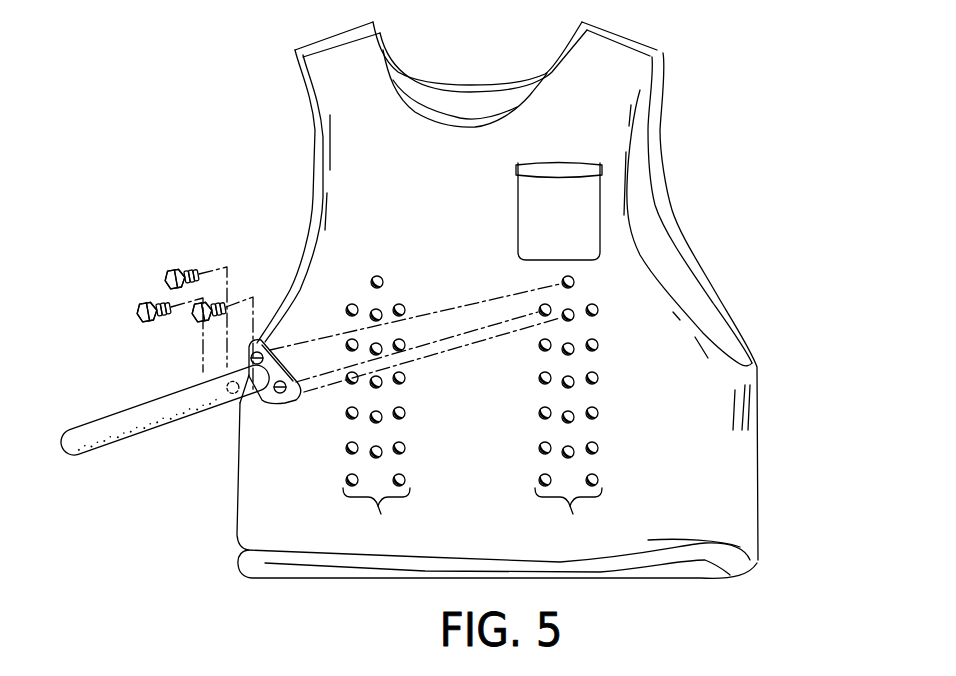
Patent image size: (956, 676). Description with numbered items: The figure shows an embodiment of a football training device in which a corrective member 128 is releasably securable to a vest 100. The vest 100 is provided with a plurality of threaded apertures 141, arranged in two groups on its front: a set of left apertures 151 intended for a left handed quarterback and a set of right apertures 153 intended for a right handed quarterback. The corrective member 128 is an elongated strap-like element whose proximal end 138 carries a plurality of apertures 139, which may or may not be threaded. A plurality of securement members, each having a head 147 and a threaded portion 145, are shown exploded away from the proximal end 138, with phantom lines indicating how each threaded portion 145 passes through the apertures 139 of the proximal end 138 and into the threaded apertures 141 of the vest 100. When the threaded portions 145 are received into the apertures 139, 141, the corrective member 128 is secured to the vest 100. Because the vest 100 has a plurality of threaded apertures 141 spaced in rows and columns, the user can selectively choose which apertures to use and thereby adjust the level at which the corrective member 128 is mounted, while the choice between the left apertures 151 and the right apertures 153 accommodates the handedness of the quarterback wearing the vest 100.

The vest 100 is at (742, 108).
The corrective member 128 is at (165, 427).
The proximal end 138 is at (258, 403).
The apertures 139 is at (262, 343).
The threaded apertures 141 is at (378, 277).
The threaded portion 145 is at (187, 270).
The head 147 is at (167, 272).
The left apertures 151 is at (568, 518).
The right apertures 153 is at (503, 368).